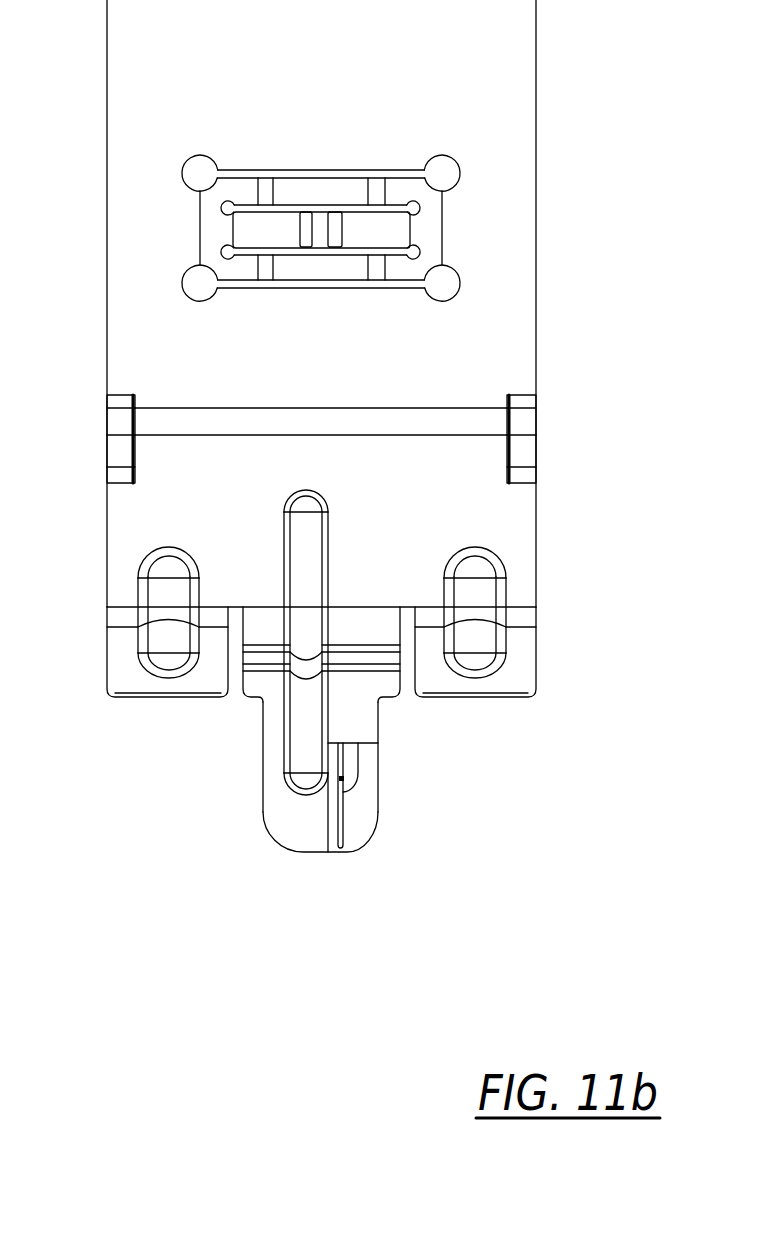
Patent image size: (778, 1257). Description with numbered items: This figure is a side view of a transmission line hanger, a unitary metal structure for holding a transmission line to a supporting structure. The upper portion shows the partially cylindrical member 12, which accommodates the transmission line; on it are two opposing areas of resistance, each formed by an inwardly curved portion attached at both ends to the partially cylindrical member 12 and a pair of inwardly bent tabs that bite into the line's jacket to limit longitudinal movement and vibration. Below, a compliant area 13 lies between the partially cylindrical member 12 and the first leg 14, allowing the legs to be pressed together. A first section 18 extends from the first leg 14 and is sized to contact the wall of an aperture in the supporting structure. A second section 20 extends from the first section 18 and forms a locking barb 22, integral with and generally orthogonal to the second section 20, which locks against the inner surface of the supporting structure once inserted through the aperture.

The partially cylindrical member 12 is at (143, 125).
The compliant area 13 is at (484, 437).
The first leg 14 is at (527, 519).
The first section 18 is at (380, 740).
The second section 20 is at (298, 826).
The locking barb 22 is at (353, 832).